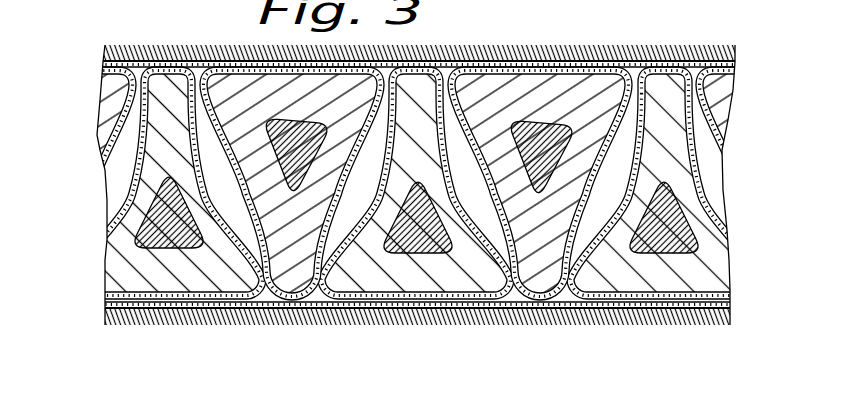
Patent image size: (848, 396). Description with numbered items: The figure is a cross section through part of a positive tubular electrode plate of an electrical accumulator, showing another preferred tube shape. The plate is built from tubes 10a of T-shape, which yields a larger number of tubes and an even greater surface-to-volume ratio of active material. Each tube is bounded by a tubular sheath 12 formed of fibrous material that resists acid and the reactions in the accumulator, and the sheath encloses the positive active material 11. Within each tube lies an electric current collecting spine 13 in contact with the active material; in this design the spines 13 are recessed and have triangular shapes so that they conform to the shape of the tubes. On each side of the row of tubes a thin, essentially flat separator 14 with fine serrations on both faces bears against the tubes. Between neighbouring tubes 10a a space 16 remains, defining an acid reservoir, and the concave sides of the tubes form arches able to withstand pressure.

The T-shaped tube 10a is at (133, 170).
The positive active material 11 is at (117, 262).
The tubular sheath 12 is at (137, 132).
The electric current collecting spine 13 is at (180, 228).
The separator 14 is at (580, 48).
The space 16 is at (245, 200).